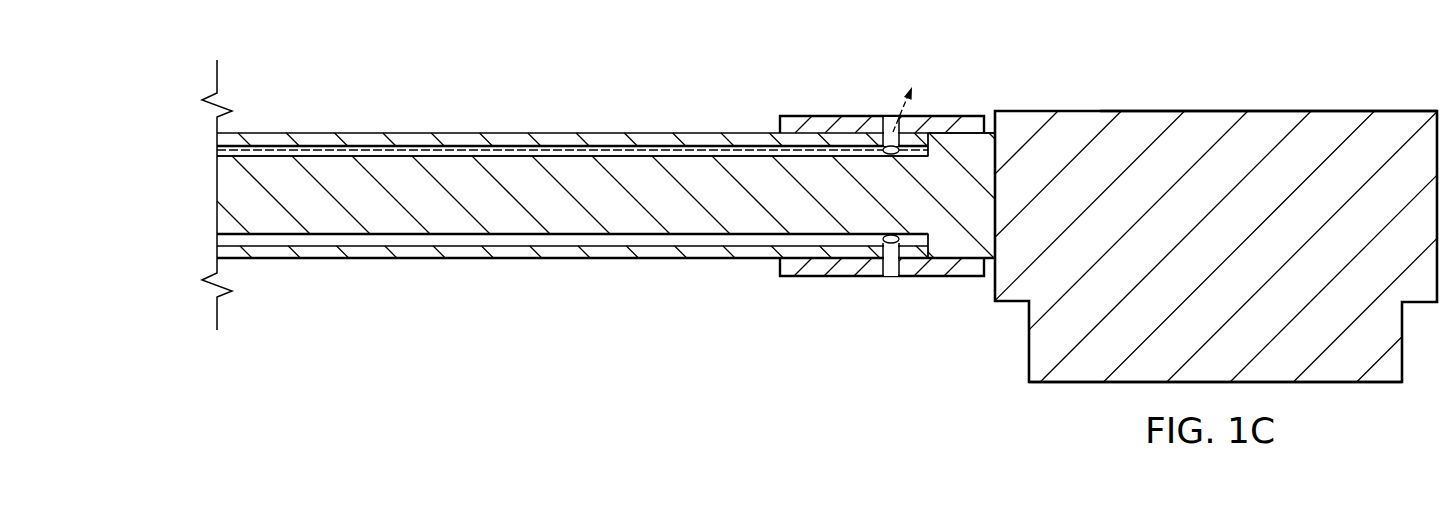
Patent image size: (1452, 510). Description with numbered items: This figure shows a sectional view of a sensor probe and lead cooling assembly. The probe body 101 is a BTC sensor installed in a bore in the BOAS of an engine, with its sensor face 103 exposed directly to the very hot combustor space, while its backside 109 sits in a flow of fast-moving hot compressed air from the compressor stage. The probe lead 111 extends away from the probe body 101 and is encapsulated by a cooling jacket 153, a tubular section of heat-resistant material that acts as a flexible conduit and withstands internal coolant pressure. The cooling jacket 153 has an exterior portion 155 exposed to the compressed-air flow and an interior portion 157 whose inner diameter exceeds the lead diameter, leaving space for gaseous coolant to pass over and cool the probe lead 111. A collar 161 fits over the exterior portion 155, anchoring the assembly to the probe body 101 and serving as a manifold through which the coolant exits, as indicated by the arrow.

The probe body 101 is at (1236, 222).
The sensor face 103 is at (1351, 394).
The backside 109 is at (1221, 100).
The probe lead 111 is at (551, 208).
The cooling jacket 153 is at (606, 113).
The exterior portion 155 is at (410, 132).
The interior portion 157 is at (512, 243).
The collar 161 is at (823, 109).